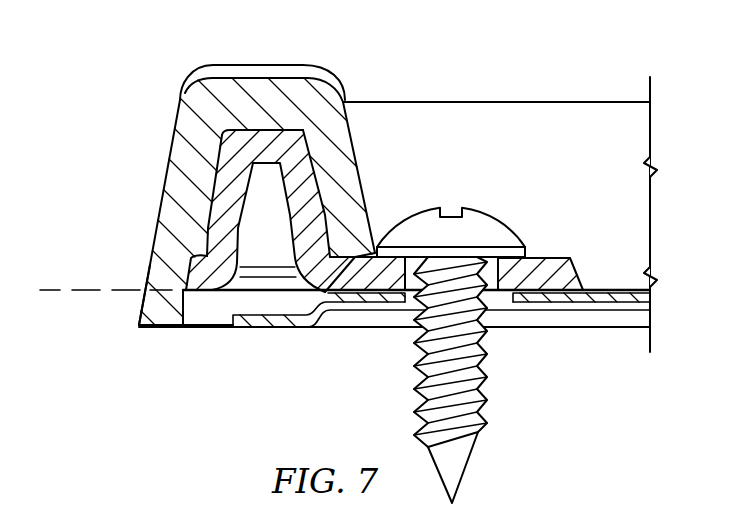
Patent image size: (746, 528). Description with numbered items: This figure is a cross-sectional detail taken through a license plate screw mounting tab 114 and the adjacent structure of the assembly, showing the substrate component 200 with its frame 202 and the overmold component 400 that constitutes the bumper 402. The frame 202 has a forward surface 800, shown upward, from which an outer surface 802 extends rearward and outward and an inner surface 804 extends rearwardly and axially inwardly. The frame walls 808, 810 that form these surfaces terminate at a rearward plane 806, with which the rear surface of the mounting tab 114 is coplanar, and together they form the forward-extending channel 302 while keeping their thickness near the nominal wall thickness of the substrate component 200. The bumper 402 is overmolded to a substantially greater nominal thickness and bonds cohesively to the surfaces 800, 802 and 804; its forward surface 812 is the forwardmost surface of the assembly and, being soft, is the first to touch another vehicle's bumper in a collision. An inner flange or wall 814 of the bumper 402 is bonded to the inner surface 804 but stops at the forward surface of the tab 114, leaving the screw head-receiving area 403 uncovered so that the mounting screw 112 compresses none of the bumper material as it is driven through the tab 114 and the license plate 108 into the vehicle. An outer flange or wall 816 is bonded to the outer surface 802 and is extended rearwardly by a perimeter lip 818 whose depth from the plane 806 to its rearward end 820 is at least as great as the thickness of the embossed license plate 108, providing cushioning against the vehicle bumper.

The forward surface 800 is at (268, 130).
The forward surface of bumper 812 is at (233, 65).
The outer surface 802 is at (210, 167).
The inner surface 804 is at (352, 152).
The inner flange or wall 814 is at (348, 193).
The frame 202 is at (227, 215).
The frame wall 808 is at (227, 183).
The outer flange or wall 816 is at (172, 243).
The perimeter lip 818 is at (140, 305).
The rearward end of lip 820 is at (157, 327).
The frame wall 810 is at (327, 245).
The rearward plane 806 is at (53, 290).
The substrate component 200 is at (198, 291).
The forward-extending channel 302 is at (270, 250).
The license plate 108 is at (597, 297).
The mounting tab 114 is at (553, 258).
The overmold component 400 is at (502, 132).
The bumper 402 is at (651, 195).
The mounting screw 112 is at (488, 398).
The screw head-receiving area 403 is at (508, 250).